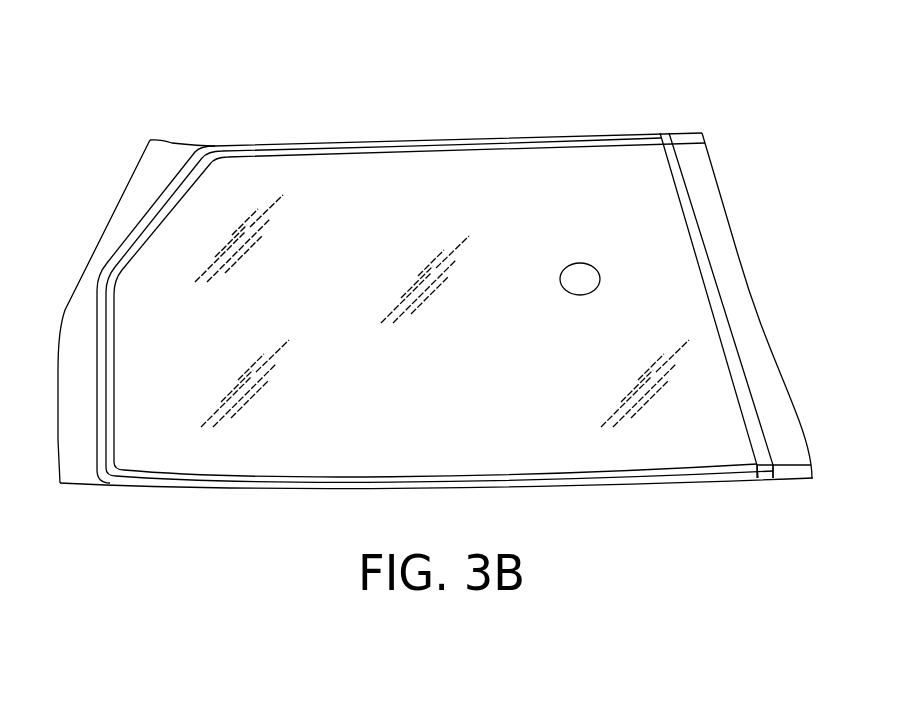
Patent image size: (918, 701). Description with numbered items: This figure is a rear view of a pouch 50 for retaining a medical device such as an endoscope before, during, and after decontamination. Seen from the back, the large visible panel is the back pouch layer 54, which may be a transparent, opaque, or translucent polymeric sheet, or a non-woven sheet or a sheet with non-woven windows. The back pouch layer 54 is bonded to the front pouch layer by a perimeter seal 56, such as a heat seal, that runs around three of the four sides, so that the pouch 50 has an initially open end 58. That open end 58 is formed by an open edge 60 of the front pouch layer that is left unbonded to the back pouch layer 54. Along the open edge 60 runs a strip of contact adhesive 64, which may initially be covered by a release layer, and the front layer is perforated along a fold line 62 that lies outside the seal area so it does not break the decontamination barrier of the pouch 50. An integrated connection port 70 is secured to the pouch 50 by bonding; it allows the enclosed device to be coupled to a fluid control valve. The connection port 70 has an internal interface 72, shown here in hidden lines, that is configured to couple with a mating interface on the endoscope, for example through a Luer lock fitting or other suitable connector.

The pouch 50 is at (688, 95).
The back pouch layer 54 is at (411, 401).
The perimeter seal 56 is at (100, 450).
The open end 58 is at (694, 191).
The open edge 60 is at (743, 410).
The fold line 62 is at (764, 449).
The strip of contact adhesive 64 is at (738, 325).
The connection port 70 is at (584, 250).
The internal interface 72 is at (545, 257).